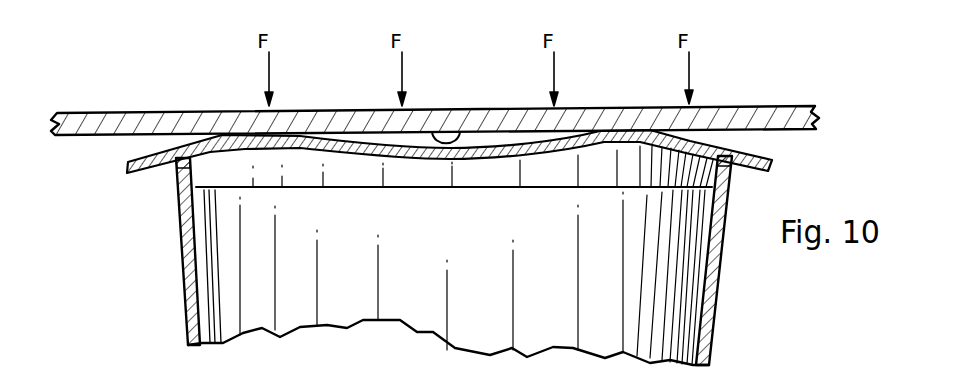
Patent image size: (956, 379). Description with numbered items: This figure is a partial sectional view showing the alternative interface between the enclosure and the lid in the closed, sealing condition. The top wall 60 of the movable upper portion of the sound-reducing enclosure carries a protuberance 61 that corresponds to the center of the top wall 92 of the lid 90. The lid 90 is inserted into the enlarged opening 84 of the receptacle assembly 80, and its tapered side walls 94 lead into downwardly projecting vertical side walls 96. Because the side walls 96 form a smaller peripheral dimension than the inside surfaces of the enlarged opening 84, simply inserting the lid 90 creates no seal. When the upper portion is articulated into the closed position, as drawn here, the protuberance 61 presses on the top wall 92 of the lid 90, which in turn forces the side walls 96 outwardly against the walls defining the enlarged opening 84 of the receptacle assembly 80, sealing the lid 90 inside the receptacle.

The top wall 60 is at (597, 108).
The protuberance 61 is at (450, 133).
The receptacle assembly 80 is at (175, 260).
The enlarged opening 84 is at (490, 281).
The lid 90 is at (135, 153).
The top wall 92 is at (517, 148).
The tapered side walls 94 is at (181, 160).
The side walls 96 is at (372, 181).